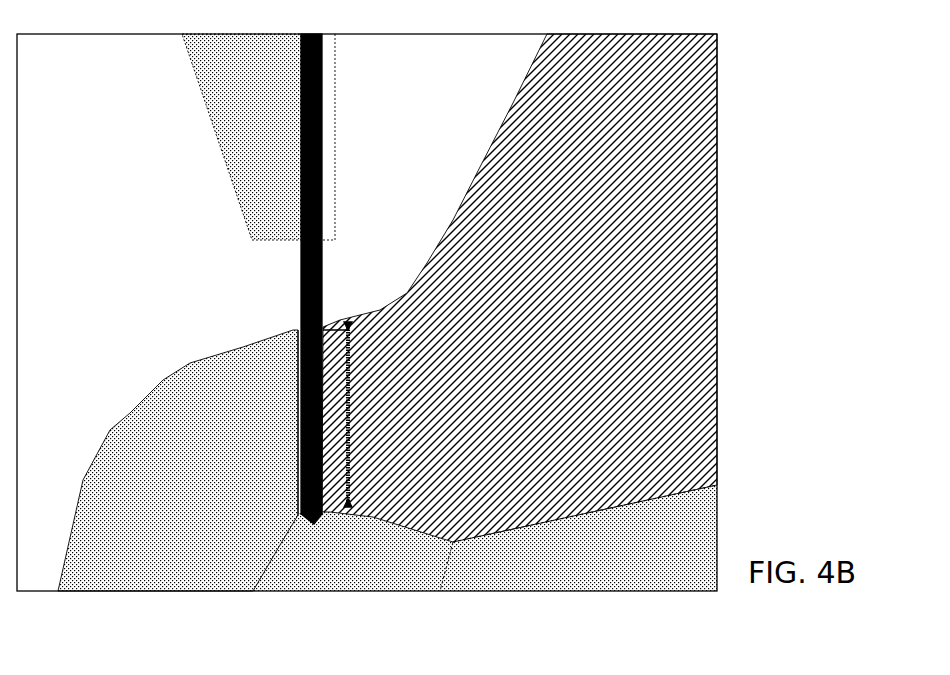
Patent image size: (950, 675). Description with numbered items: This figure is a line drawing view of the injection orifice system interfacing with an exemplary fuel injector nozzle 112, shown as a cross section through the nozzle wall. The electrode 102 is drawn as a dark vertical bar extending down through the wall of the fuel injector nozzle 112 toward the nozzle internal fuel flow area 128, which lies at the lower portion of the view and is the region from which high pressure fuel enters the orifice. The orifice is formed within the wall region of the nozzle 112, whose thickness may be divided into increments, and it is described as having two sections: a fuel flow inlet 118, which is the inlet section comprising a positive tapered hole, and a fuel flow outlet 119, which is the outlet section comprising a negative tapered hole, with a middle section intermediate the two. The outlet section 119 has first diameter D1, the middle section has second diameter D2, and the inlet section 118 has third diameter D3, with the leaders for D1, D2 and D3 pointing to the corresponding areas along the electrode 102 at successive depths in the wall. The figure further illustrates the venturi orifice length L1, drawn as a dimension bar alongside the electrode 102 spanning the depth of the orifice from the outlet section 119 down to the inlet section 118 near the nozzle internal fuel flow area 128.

The electrode 102 is at (191, 279).
The fuel injector nozzle 112 is at (475, 312).
The fuel flow inlet 118 is at (175, 423).
The fuel flow outlet 119 is at (584, 274).
The nozzle internal fuel flow area 128 is at (672, 518).
The first diameter D1 is at (239, 315).
The second diameter D2 is at (202, 380).
The third diameter D3 is at (387, 588).
The venturi orifice length L1 is at (584, 393).